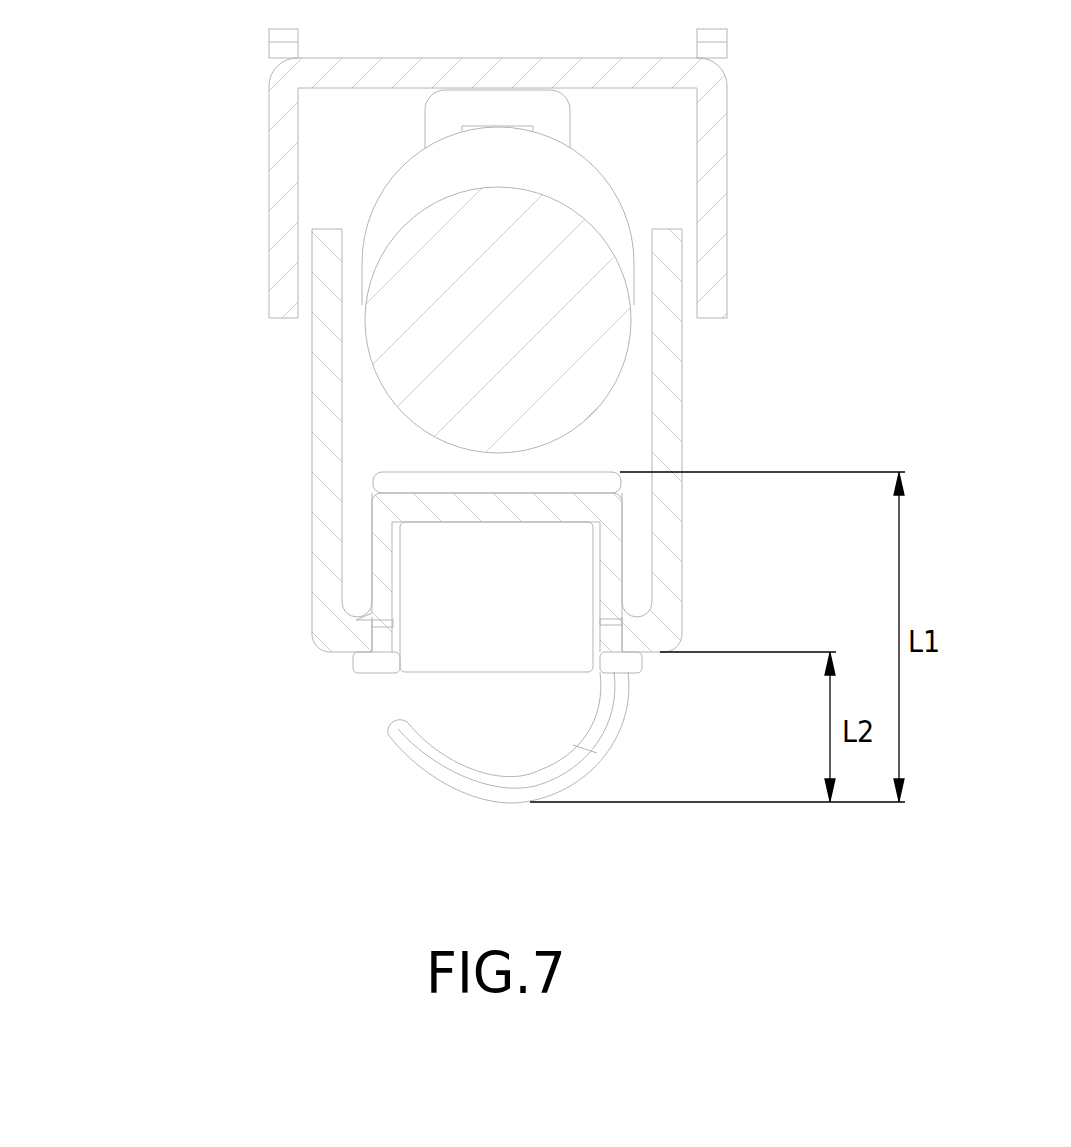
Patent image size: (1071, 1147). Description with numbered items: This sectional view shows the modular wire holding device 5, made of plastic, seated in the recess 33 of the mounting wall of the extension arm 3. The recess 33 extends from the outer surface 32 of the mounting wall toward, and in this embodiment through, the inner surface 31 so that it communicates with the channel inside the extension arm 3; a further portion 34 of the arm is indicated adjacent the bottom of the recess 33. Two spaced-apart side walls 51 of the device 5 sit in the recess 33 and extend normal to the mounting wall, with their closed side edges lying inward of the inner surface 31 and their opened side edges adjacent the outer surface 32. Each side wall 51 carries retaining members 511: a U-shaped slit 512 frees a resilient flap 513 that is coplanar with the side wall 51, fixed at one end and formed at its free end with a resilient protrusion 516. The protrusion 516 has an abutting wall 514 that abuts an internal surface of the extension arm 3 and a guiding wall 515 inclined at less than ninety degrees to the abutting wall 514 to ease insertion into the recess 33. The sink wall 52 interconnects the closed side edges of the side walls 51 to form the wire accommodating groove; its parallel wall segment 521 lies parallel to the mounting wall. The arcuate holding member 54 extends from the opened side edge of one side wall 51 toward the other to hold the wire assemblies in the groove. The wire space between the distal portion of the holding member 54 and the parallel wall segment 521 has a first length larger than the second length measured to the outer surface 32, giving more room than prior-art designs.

The extension arm 3 is at (543, 340).
The inner surface 31 is at (656, 534).
The outer surface 32 is at (682, 578).
The recess 33 is at (623, 640).
The foot 34 is at (632, 665).
The modular wire holding device 5 is at (411, 596).
The side wall 51 is at (620, 525).
The retaining member 511 is at (216, 608).
The U-shaped slit 512 is at (377, 633).
The resilient flap 513 is at (370, 568).
The abutting wall 514 is at (353, 619).
The guiding wall 515 is at (360, 608).
The resilient protrusion 516 is at (255, 602).
The sink wall 52 is at (502, 441).
The parallel wall segment 521 is at (562, 472).
The holding member 54 is at (612, 738).